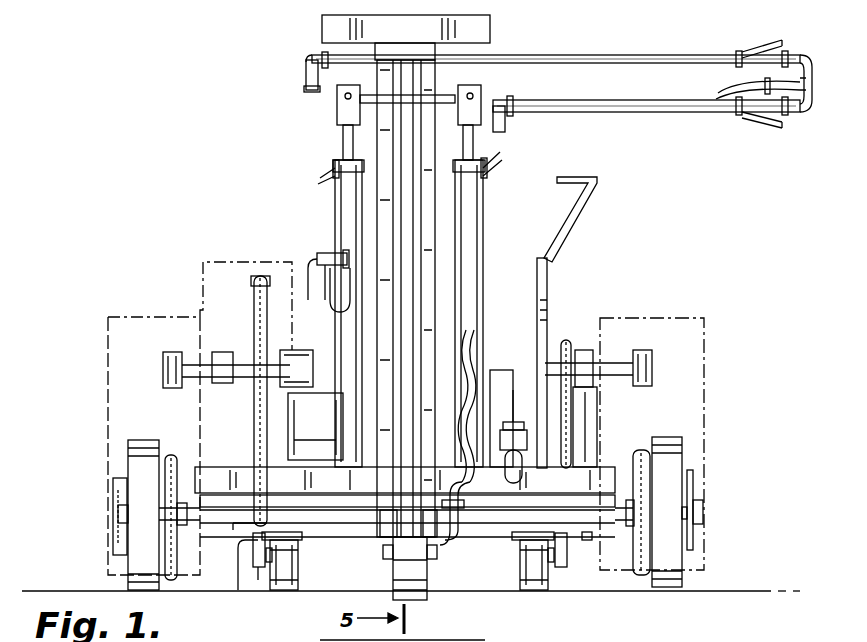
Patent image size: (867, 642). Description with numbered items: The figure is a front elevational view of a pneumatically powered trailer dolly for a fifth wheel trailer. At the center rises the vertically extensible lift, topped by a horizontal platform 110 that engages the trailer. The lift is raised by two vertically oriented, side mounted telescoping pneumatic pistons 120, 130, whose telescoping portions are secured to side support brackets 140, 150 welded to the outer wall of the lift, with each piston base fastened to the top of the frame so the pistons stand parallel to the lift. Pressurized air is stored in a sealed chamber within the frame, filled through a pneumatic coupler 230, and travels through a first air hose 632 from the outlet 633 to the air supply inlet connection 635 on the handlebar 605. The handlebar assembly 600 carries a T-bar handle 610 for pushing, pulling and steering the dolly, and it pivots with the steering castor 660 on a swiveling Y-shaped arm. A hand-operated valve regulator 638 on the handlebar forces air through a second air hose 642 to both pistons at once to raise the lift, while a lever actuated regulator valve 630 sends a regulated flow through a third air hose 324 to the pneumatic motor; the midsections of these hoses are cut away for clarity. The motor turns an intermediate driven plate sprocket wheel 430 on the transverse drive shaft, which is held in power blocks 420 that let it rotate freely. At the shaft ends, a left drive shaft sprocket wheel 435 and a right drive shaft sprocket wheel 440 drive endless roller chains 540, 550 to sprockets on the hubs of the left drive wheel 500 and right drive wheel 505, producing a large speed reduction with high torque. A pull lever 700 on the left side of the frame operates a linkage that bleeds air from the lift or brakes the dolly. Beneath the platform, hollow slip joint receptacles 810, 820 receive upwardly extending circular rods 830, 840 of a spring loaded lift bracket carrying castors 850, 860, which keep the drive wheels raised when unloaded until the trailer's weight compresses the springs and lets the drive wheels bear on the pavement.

The horizontal platform 110 is at (322, 30).
The pneumatic piston 120 is at (504, 222).
The pneumatic piston 130 is at (292, 233).
The side support bracket 140 is at (505, 102).
The side support bracket 150 is at (340, 100).
The pneumatic coupler 230 is at (527, 445).
The third air hose 324 is at (304, 78).
The power block 420 is at (562, 345).
The intermediate driven plate sprocket wheel 430 is at (254, 287).
The left drive shaft sprocket wheel 435 is at (652, 368).
The right drive shaft sprocket wheel 440 is at (163, 374).
The left drive wheel 500 is at (672, 462).
The right drive wheel 505 is at (128, 464).
The endless roller chain 540 is at (650, 412).
The endless roller chain 550 is at (168, 412).
The handlebar assembly 600 is at (285, 205).
The handlebar 605 is at (605, 56).
The T-bar handle 610 is at (420, 90).
The lever actuated regulator valve 630 is at (766, 44).
The first air hose 632 is at (720, 88).
The outlet 633 is at (442, 546).
The air supply inlet connection 635 is at (818, 82).
The hand-operated valve regulator 638 is at (762, 120).
The second air hose 642 is at (320, 176).
The steering castor 660 is at (412, 596).
The pull lever 700 is at (585, 224).
The slip joint receptacle 810 is at (580, 536).
The slip joint receptacle 820 is at (247, 523).
The circular rod 830 is at (565, 563).
The circular rod 840 is at (300, 545).
The castor 850 is at (538, 588).
The castor 860 is at (278, 590).